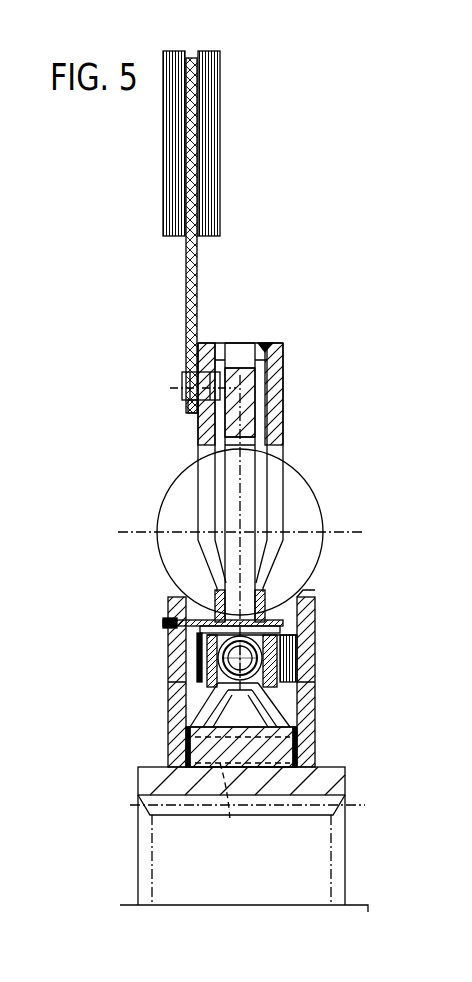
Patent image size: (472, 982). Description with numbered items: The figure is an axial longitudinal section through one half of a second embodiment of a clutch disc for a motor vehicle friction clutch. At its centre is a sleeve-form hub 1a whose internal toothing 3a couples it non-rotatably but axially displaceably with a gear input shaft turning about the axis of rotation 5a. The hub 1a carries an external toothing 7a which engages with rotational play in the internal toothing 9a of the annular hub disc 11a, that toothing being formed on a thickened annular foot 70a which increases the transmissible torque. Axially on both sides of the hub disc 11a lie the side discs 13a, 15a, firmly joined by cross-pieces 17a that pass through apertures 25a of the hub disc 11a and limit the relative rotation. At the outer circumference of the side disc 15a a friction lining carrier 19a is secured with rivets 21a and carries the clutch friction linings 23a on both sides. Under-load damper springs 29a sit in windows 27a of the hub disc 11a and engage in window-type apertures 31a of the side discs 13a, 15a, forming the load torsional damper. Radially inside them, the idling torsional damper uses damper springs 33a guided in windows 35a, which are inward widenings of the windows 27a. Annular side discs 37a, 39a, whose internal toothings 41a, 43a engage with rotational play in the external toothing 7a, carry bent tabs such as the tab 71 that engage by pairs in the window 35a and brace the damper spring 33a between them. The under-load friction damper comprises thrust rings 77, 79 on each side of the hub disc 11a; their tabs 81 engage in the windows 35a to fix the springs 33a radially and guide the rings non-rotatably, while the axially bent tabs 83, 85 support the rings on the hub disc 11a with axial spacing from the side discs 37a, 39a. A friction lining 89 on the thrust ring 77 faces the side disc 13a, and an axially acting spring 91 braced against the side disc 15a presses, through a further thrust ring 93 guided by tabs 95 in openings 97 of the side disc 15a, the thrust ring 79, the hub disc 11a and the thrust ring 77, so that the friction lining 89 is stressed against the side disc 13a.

The hub 1a is at (310, 783).
The internal toothing 3a is at (288, 808).
The axis of rotation 5a is at (368, 910).
The external toothing 7a is at (262, 746).
The internal toothing 9a is at (231, 820).
The hub disc 11a is at (240, 385).
The side disc 13a is at (277, 420).
The side disc 15a is at (208, 432).
The cross-pieces 17a is at (217, 343).
The friction lining carrier 19a is at (187, 281).
The rivets 21a is at (183, 383).
The clutch friction linings 23a is at (180, 133).
The apertures 25a is at (244, 343).
The windows 27a is at (250, 470).
The damper springs 29a is at (306, 488).
The window-type apertures 31a is at (203, 482).
The damper springs 33a is at (285, 658).
The windows 35a is at (282, 690).
The side disc 37a is at (275, 710).
The side disc 39a is at (170, 700).
The internal toothing 41a is at (300, 735).
The internal toothing 43a is at (190, 750).
The annular foot 70a is at (199, 714).
The tab 71 is at (262, 642).
The thrust ring 77 is at (305, 625).
The thrust ring 79 is at (180, 605).
The tabs 81 is at (290, 600).
The tab 83 is at (265, 602).
The tab 85 is at (178, 590).
The friction lining 89 is at (288, 661).
The axially acting spring 91 is at (197, 662).
The thrust ring 93 is at (196, 628).
The tabs 95 is at (175, 622).
The openings 97 is at (190, 615).